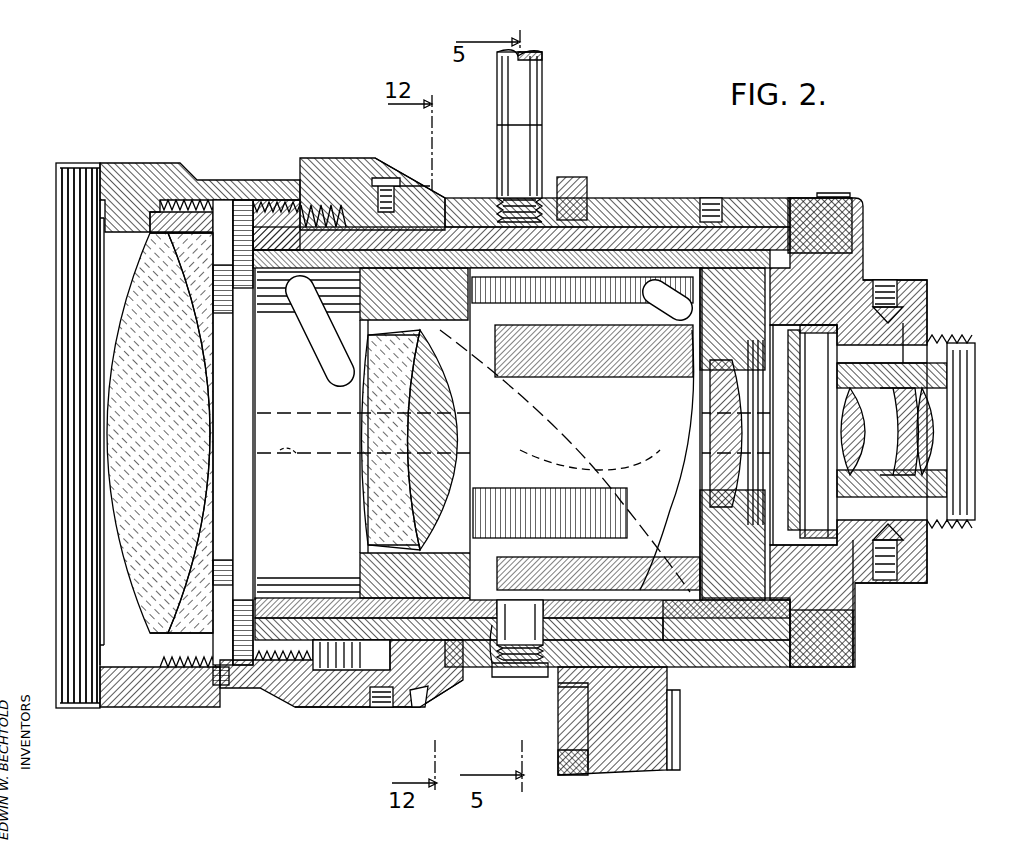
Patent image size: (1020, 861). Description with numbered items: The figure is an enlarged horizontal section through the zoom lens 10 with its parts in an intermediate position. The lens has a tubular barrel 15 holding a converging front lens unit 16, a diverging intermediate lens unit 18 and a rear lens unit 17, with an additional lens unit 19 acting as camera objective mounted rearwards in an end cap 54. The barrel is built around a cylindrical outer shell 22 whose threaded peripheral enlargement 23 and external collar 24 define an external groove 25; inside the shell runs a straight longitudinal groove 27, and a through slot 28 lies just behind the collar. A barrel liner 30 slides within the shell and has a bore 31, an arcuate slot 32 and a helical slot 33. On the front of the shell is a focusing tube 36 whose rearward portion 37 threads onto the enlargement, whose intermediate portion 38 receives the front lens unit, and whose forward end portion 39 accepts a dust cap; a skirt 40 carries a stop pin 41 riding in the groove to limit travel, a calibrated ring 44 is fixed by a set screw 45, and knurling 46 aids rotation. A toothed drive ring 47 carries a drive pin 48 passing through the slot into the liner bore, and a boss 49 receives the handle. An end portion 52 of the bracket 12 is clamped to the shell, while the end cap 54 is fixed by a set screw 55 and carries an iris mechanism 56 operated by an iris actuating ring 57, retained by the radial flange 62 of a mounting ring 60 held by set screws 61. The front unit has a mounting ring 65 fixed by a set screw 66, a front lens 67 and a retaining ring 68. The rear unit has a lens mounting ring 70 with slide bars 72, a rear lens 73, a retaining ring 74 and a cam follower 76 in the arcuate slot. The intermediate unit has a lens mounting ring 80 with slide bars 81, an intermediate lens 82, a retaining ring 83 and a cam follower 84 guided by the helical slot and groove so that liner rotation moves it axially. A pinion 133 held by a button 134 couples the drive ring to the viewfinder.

The zoom lens 10 is at (949, 128).
The bracket 12 is at (655, 726).
The barrel 15 is at (152, 156).
The front lens unit 16 is at (118, 493).
The rear lens unit 17 is at (704, 396).
The intermediate lens unit 18 is at (378, 486).
The additional lens unit 19 is at (542, 98).
The outer shell 22 is at (676, 236).
The peripheral enlargement 23 is at (272, 200).
The collar 24 is at (466, 198).
The external groove 25 is at (400, 707).
The groove 27 is at (290, 462).
The through slot 28 is at (492, 665).
The barrel liner 30 is at (278, 605).
The bore 31 is at (512, 598).
The arcuate slot 32 is at (690, 530).
The helical slot 33 is at (348, 368).
The focusing tube 36 is at (146, 707).
The rearward portion 37 is at (332, 158).
The intermediate portion 38 is at (216, 200).
The forward end portion 39 is at (88, 165).
The skirt 40 is at (418, 704).
The stop pin 41 is at (386, 178).
The calibrated ring 44 is at (426, 188).
The set screw 45 is at (372, 708).
The knurling 46 is at (318, 708).
The drive ring 47 is at (576, 178).
The drive pin 48 is at (515, 678).
The boss 49 is at (542, 142).
The end portion of bracket 52 is at (626, 198).
The end cap 54 is at (778, 667).
The set screw 55 is at (716, 198).
The iris mechanism 56 is at (818, 497).
The iris actuating ring 57 is at (845, 667).
The mounting ring 60 is at (930, 305).
The set screw 61 is at (893, 283).
The radial flange 62 is at (866, 220).
The mounting ring 65 is at (107, 216).
The set screw 66 is at (216, 686).
The front lens 67 is at (122, 425).
The retaining ring 68 is at (244, 200).
The lens mounting ring 70 is at (740, 585).
The slide bars 72 is at (588, 366).
The rear lens 73 is at (726, 404).
The retaining ring 74 is at (732, 332).
The cam follower 76 is at (565, 461).
The lens mounting ring 80 is at (372, 572).
The slide bars 81 is at (570, 292).
The intermediate lens 82 is at (380, 430).
The retaining ring 83 is at (362, 314).
The cam follower 84 is at (470, 430).
The pinion 133 is at (572, 762).
The button 134 is at (680, 750).